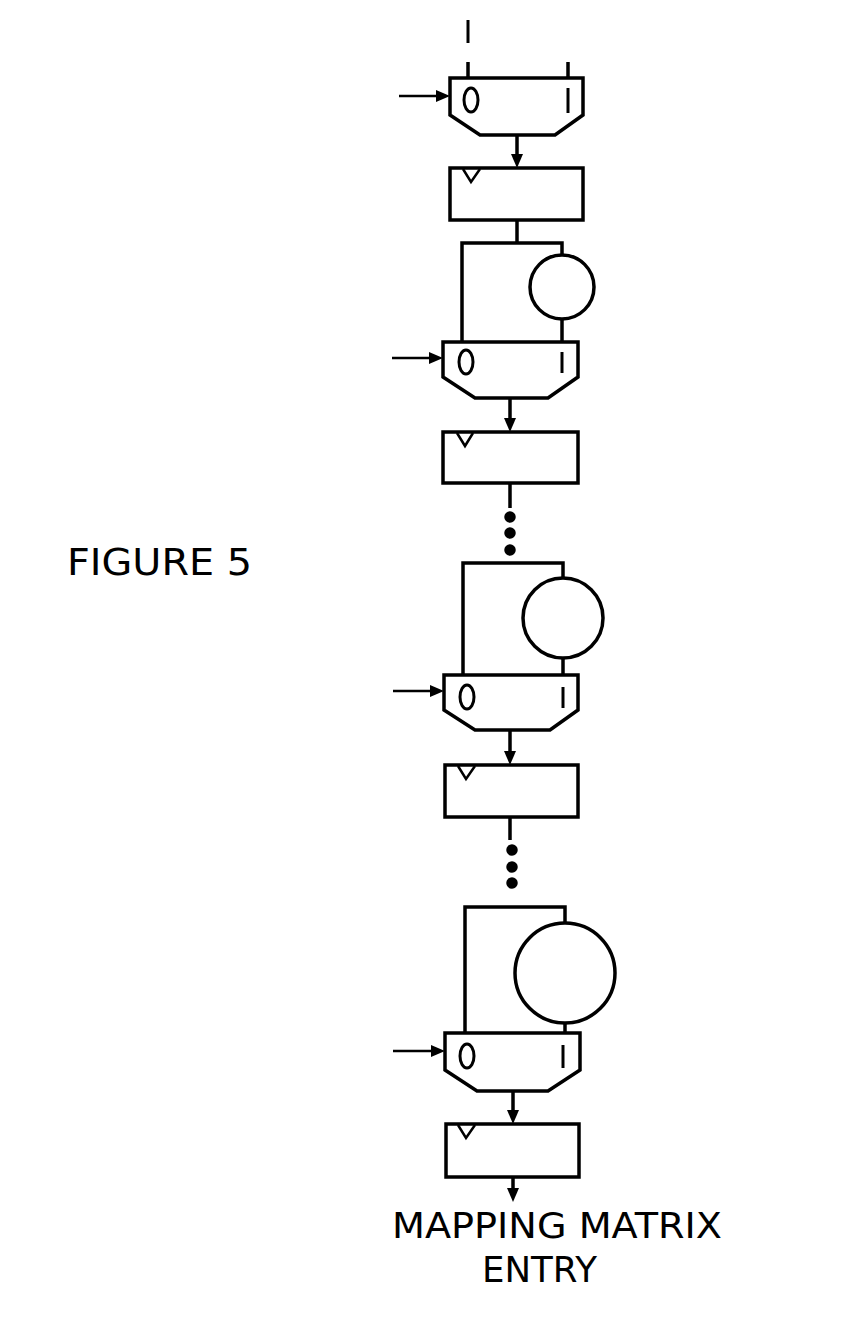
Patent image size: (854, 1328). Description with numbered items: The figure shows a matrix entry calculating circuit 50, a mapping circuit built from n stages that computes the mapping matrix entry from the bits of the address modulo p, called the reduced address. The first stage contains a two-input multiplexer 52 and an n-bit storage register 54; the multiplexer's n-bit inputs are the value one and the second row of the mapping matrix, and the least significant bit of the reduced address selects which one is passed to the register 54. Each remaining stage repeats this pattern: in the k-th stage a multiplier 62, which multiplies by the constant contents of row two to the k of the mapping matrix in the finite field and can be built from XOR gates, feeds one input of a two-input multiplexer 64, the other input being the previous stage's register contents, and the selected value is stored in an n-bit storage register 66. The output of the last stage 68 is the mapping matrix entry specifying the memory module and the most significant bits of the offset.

The matrix entry calculating circuit 50 is at (170, 130).
The two-input multiplexer 52 is at (577, 98).
The n-bit storage register 54 is at (577, 203).
The multiplier 62 is at (602, 617).
The two-input multiplexer 64 is at (577, 700).
The n-bit storage register 66 is at (563, 795).
The last stage 68 is at (628, 940).